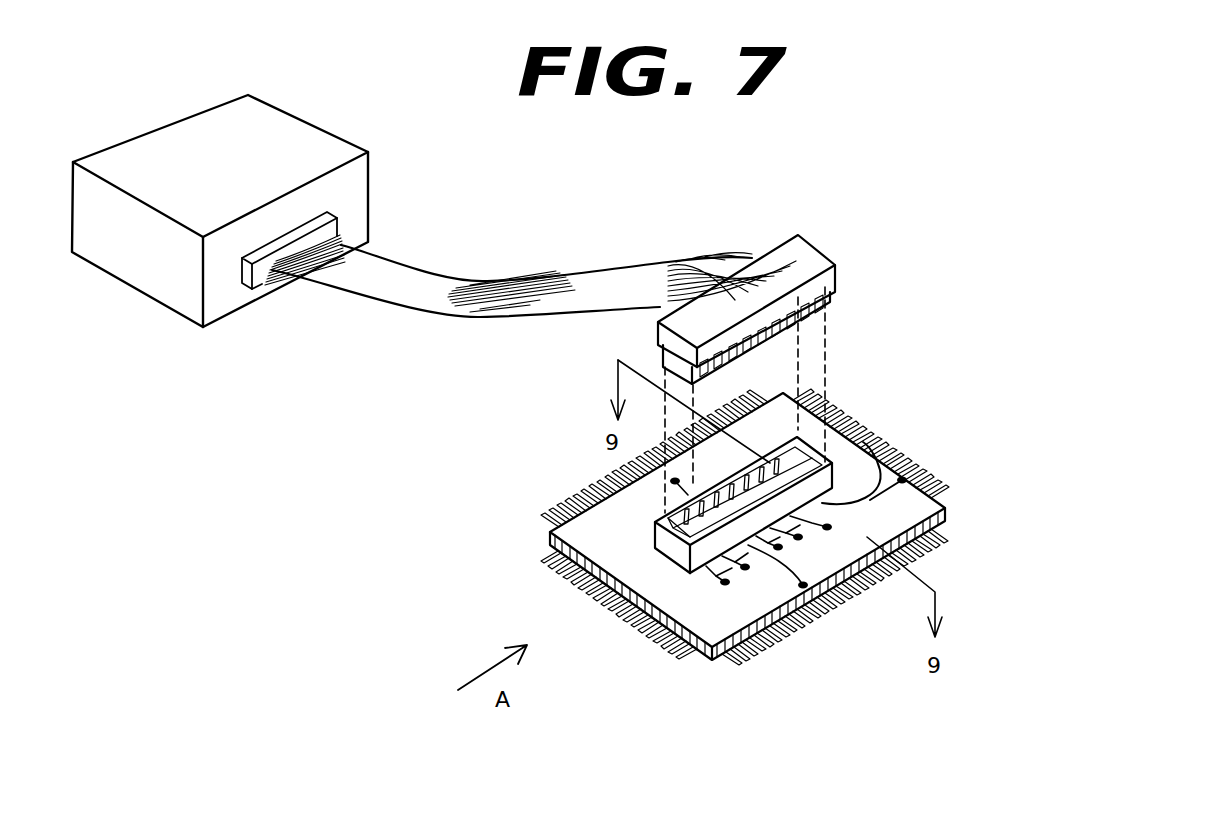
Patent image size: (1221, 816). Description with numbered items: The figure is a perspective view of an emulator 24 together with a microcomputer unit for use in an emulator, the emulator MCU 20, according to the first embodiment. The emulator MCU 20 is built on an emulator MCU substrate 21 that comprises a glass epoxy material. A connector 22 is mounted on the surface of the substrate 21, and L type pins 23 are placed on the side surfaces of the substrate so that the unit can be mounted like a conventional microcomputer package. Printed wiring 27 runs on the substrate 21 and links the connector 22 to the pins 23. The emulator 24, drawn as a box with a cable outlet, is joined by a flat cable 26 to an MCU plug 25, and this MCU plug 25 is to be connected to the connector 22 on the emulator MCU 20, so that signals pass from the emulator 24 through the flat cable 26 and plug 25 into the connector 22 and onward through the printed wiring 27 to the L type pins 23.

The emulator MCU 20 is at (795, 573).
The emulator MCU substrate 21 is at (680, 588).
The connector 22 is at (660, 535).
The L type pins 23 is at (760, 653).
The emulator 24 is at (330, 140).
The MCU plug 25 is at (808, 262).
The flat cable 26 is at (487, 281).
The printed wiring 27 is at (863, 442).